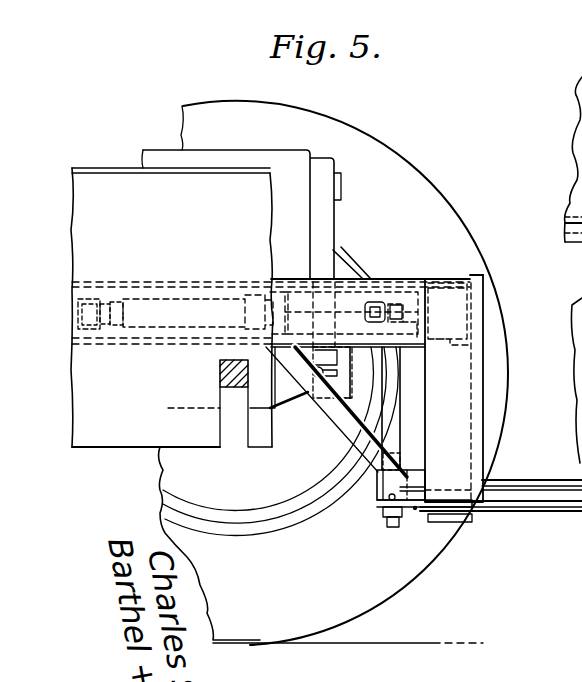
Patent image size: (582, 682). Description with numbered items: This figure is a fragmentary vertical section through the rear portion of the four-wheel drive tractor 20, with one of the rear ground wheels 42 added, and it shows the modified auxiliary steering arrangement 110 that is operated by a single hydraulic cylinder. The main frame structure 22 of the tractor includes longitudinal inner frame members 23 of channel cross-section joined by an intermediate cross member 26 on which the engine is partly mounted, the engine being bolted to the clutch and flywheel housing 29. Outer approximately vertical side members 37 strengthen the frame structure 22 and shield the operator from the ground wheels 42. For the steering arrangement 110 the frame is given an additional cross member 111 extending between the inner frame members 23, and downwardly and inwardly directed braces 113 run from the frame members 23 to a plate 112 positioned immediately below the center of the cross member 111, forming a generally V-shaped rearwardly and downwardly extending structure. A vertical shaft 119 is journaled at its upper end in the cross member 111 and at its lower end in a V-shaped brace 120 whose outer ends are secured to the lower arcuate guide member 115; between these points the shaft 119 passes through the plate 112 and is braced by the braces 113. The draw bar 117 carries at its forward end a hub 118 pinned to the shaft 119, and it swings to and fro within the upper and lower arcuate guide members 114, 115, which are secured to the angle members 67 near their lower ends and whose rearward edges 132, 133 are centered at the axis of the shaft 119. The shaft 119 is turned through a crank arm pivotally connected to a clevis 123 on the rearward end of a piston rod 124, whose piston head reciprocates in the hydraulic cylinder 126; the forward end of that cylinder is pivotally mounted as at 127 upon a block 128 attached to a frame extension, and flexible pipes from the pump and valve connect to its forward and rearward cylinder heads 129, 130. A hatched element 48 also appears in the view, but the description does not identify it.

The tractor 20 is at (367, 254).
The main frame structure 22 is at (484, 272).
The longitudinal inner frame members 23 is at (177, 282).
The intermediate cross member 26 is at (340, 366).
The clutch and flywheel housing 29 is at (581, 285).
The side members 37 is at (113, 441).
The rear ground wheels 42 is at (370, 592).
The block 48 is at (220, 372).
The angle members 67 is at (460, 365).
The modified auxiliary steering arrangement 110 is at (496, 416).
The additional cross member 111 is at (422, 277).
The plate 112 is at (404, 472).
The braces 113 is at (345, 435).
The upper arcuate guide member 114 is at (516, 480).
The lower arcuate guide member 115 is at (518, 512).
The draw bar 117 is at (581, 533).
The hub 118 is at (375, 488).
The vertical shaft 119 is at (388, 404).
The V-shaped brace 120 is at (416, 514).
The clevis 123 is at (388, 290).
The piston rod 124 is at (296, 290).
The hydraulic cylinder 126 is at (167, 328).
The pivotal mounting 127 is at (89, 297).
The block 128 is at (103, 326).
The forward cylinder head 129 is at (110, 326).
The rearward cylinder head 130 is at (257, 283).
The rearward edge of upper guide member 132 is at (578, 482).
The rearward edge of lower guide member 133 is at (581, 510).